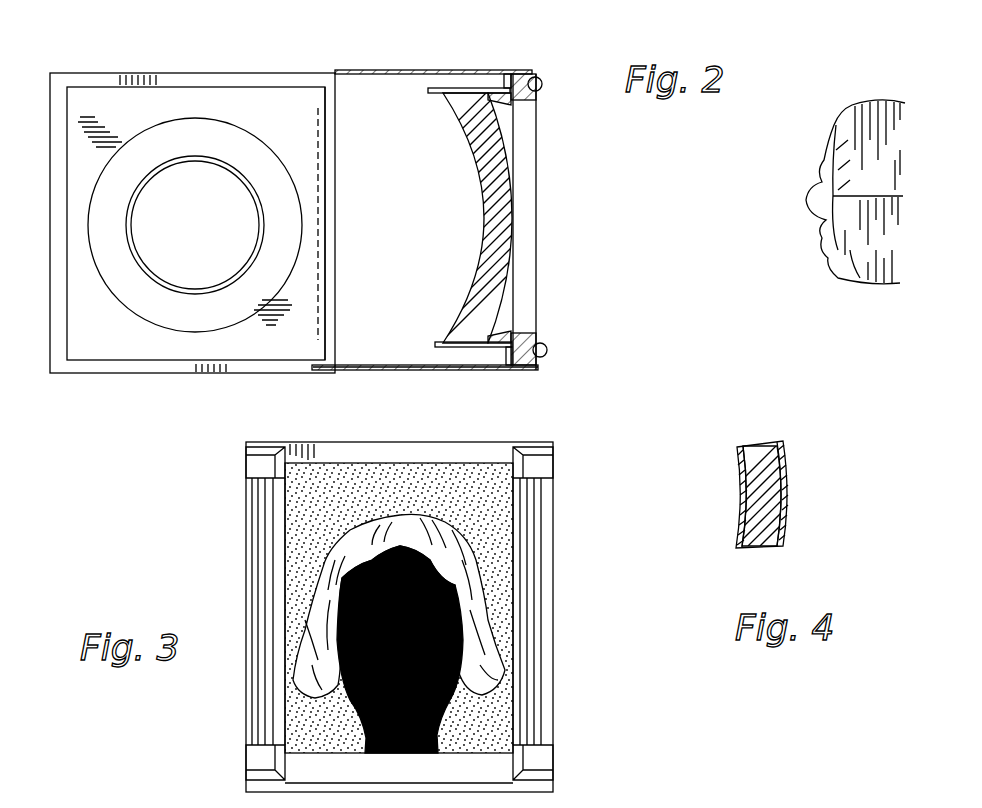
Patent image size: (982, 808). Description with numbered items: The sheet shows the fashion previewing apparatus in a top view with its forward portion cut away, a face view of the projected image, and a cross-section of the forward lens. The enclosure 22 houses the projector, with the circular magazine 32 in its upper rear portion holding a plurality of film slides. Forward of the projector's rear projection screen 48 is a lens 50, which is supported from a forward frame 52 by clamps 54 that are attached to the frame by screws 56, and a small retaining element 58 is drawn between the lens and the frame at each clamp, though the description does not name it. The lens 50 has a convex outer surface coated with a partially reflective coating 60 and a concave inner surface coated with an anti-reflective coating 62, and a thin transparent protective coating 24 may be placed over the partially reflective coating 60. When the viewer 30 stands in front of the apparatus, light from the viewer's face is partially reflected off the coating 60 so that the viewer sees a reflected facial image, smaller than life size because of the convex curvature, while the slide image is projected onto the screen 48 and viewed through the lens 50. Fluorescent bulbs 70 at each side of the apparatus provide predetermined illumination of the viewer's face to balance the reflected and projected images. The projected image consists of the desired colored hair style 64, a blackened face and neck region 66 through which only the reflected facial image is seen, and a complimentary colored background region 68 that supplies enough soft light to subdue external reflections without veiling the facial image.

In FIG. 2, the enclosure 22 is at (158, 374).
In FIG. 2, the transparent protective coating 24 is at (510, 160).
In FIG. 4, the transparent protective coating 24 is at (788, 520).
In FIG. 2, the viewer 30 is at (825, 245).
In FIG. 2, the circular magazine 32 is at (182, 168).
In FIG. 2, the screen 48 is at (318, 108).
In FIG. 2, the lens 50 is at (470, 122).
In FIG. 4, the lens 50 is at (758, 442).
In FIG. 2, the forward frame 52 is at (518, 76).
In FIG. 2, the clamps 54 is at (445, 88).
In FIG. 2, the screws 56 is at (500, 370).
In FIG. 2, the retaining wedge 58 is at (499, 96).
In FIG. 4, the partially reflective coating 60 is at (786, 473).
In FIG. 4, the anti-reflective coating 62 is at (742, 468).
In FIG. 3, the colored hair style 64 is at (447, 557).
In FIG. 3, the blackened face and neck region 66 is at (452, 634).
In FIG. 3, the colored background region 68 is at (505, 497).
In FIG. 2, the fluorescent bulbs 70 is at (542, 84).